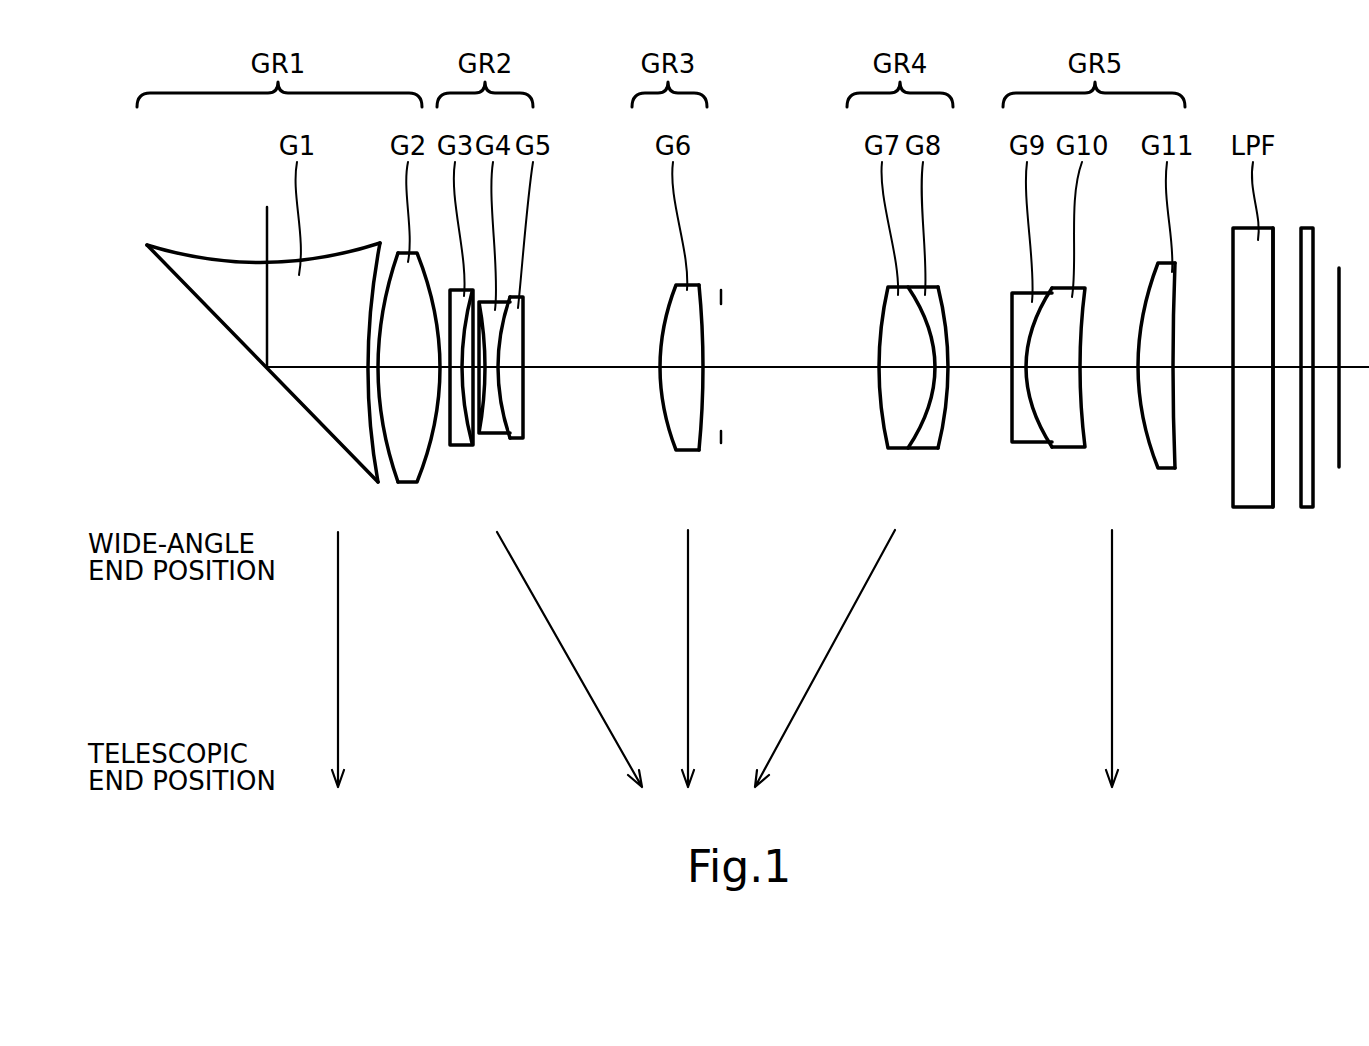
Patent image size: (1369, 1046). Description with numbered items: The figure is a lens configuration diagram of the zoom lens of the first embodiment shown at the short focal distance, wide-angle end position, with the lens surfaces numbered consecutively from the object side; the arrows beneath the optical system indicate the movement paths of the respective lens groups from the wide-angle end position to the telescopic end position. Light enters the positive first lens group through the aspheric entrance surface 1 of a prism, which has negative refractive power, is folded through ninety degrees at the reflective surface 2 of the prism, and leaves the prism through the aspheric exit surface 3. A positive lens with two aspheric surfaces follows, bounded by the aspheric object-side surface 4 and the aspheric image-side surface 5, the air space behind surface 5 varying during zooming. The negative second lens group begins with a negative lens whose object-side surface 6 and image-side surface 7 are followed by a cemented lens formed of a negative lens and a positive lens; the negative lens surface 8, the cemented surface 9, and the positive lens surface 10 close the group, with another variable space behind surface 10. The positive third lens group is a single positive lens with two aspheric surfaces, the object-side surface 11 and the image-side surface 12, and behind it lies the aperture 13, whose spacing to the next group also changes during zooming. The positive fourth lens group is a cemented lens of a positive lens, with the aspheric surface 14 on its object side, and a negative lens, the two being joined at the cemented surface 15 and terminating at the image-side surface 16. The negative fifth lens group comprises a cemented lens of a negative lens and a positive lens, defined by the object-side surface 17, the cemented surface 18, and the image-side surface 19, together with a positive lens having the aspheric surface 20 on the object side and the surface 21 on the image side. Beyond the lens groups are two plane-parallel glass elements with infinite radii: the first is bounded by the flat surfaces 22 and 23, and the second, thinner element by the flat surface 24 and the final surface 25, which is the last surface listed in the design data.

The entrance surface of prism 1 is at (195, 247).
The reflective surface of prism 2 is at (220, 323).
The exit surface of prism 3 is at (372, 408).
The object-side surface of first-group positive lens 4 is at (385, 452).
The image-side surface of first-group positive lens 5 is at (428, 475).
The object-side surface of second-group negative lens 6 is at (448, 437).
The image-side surface of second-group negative lens 7 is at (503, 348).
The object-side surface of cemented negative lens 8 is at (478, 352).
The cemented surface of second-group doublet 9 is at (500, 383).
The image-side surface of second-group positive lens 10 is at (525, 417).
The object-side surface of third-group positive lens 11 is at (665, 417).
The image-side surface of third-group positive lens 12 is at (702, 292).
The aperture 13 is at (722, 440).
The object-side surface of fourth-group positive lens 14 is at (882, 330).
The cemented surface of fourth-group doublet 15 is at (932, 347).
The image-side surface of fourth-group negative lens 16 is at (945, 430).
The object-side surface of fifth-group negative lens 17 is at (1010, 323).
The cemented surface of fifth-group doublet 18 is at (1025, 350).
The image-side surface of fifth-group cemented positive lens 19 is at (1085, 300).
The object-side surface of fifth-group positive lens 20 is at (1138, 350).
The image-side surface of fifth-group positive lens 21 is at (1180, 280).
The object-side surface of first plane-parallel plate 22 is at (1233, 348).
The image-side surface of first plane-parallel plate 23 is at (1274, 451).
The object-side surface of second plane-parallel plate 24 is at (1297, 490).
The final surface 25 is at (1317, 490).